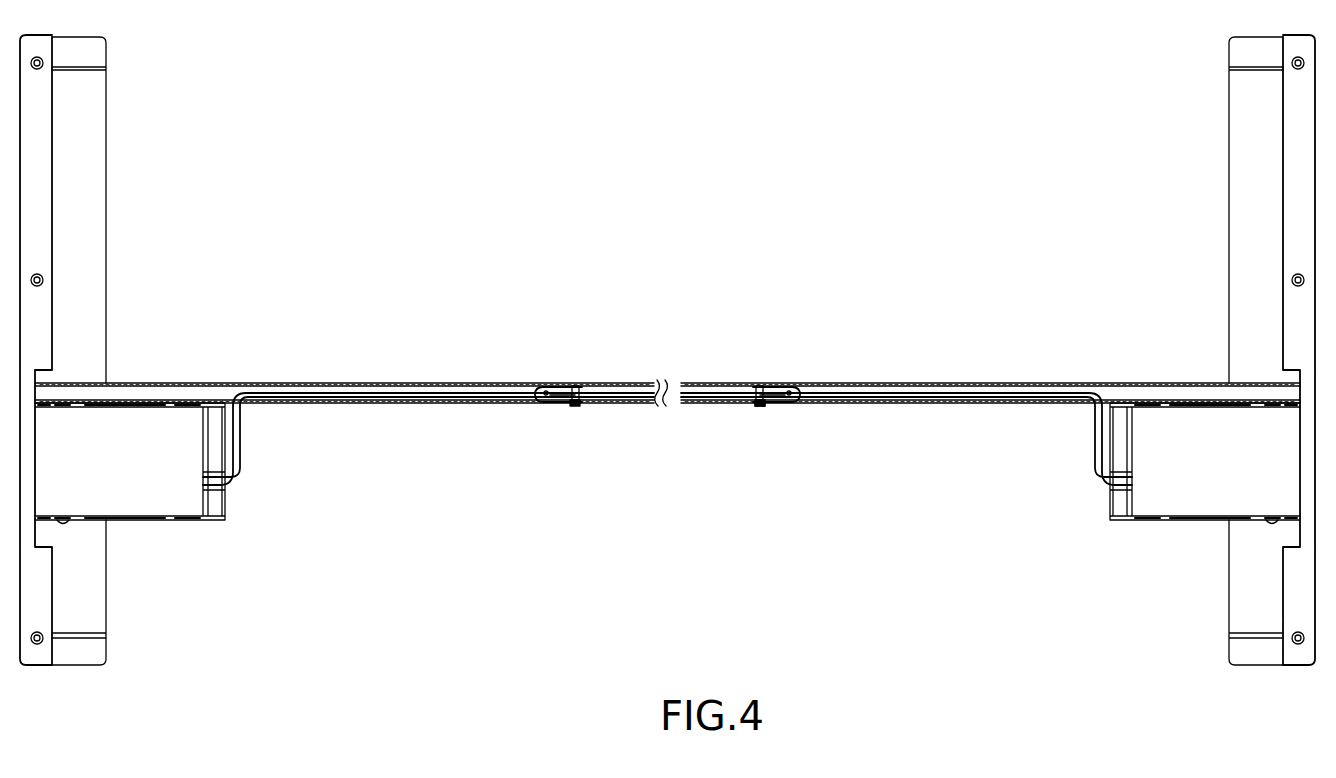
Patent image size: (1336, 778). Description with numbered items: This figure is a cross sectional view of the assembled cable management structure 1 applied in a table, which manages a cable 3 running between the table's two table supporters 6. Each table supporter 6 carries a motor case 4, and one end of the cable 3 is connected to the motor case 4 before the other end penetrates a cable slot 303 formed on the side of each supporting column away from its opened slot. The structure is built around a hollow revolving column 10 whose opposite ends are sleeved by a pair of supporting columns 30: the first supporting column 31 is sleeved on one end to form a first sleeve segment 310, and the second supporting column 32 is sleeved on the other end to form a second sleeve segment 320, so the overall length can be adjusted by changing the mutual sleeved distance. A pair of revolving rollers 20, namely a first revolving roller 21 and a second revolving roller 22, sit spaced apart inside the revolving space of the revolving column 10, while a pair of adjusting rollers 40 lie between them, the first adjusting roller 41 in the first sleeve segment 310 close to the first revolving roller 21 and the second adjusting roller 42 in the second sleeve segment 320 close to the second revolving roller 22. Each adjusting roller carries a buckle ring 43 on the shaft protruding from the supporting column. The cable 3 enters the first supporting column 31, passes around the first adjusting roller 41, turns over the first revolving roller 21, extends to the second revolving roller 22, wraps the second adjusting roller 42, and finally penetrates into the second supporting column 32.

The cable management structure 1 is at (530, 258).
The revolving column 10 is at (878, 392).
The cable 3 is at (1003, 405).
The pair of supporting columns 30 is at (1061, 358).
The first sleeve segment 310 is at (986, 372).
The second sleeve segment 320 is at (357, 372).
The cable slot 303 is at (231, 410).
The first supporting column 31 is at (1163, 385).
The second supporting column 32 is at (197, 390).
The motor case 4 is at (1165, 490).
The table supporter 6 is at (1249, 608).
The pair of adjusting rollers 40 is at (576, 284).
The first adjusting roller 41 is at (763, 385).
The second adjusting roller 42 is at (575, 385).
The buckle ring 43 is at (764, 406).
The pair of revolving rollers 20 is at (791, 535).
The first revolving roller 21 is at (793, 405).
The second revolving roller 22 is at (541, 405).